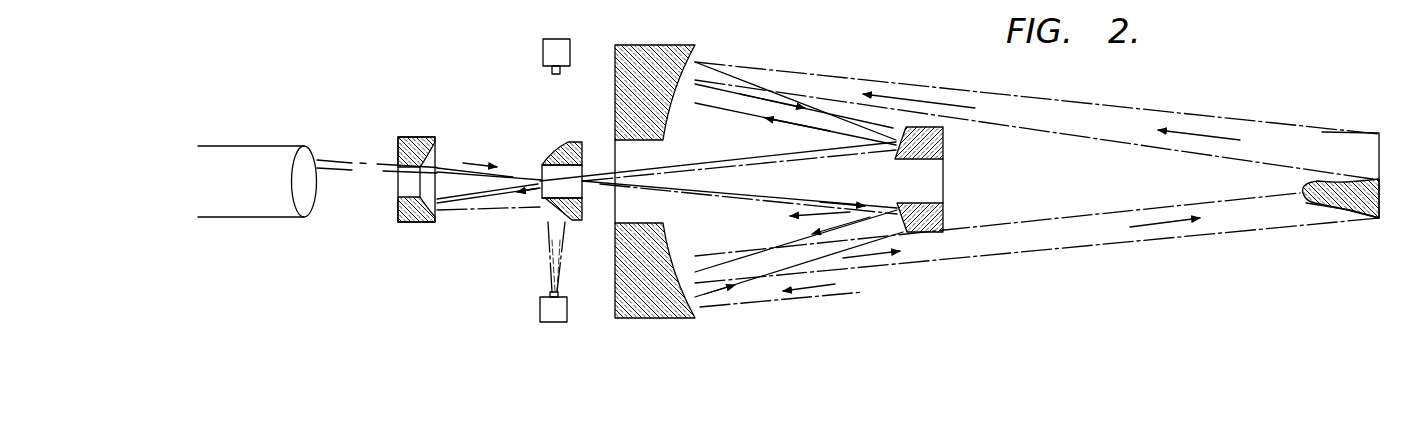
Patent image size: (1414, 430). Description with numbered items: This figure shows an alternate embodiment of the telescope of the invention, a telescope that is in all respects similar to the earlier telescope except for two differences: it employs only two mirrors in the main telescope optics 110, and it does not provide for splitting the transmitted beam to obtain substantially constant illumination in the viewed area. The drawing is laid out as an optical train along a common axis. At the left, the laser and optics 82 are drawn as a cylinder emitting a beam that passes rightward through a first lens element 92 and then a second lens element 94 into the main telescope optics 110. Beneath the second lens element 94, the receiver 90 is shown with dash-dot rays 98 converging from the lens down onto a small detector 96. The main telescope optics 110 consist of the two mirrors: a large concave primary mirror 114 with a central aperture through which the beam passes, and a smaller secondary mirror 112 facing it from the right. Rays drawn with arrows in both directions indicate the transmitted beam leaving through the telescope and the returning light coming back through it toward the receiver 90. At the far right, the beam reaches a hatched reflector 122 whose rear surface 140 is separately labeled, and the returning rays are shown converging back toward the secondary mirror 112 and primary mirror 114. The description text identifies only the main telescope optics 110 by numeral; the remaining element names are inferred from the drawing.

The laser and optics 82 is at (247, 209).
The receiver 90 is at (543, 273).
The lens 92 is at (437, 153).
The lens 94 is at (561, 150).
The detector 96 is at (557, 294).
The return beam 98 is at (575, 273).
The main telescope optics 110 is at (806, 196).
The secondary mirror 112 is at (898, 206).
The primary mirror 114 is at (675, 255).
The reflector 122 is at (1379, 193).
The reflective surface 140 is at (1317, 203).